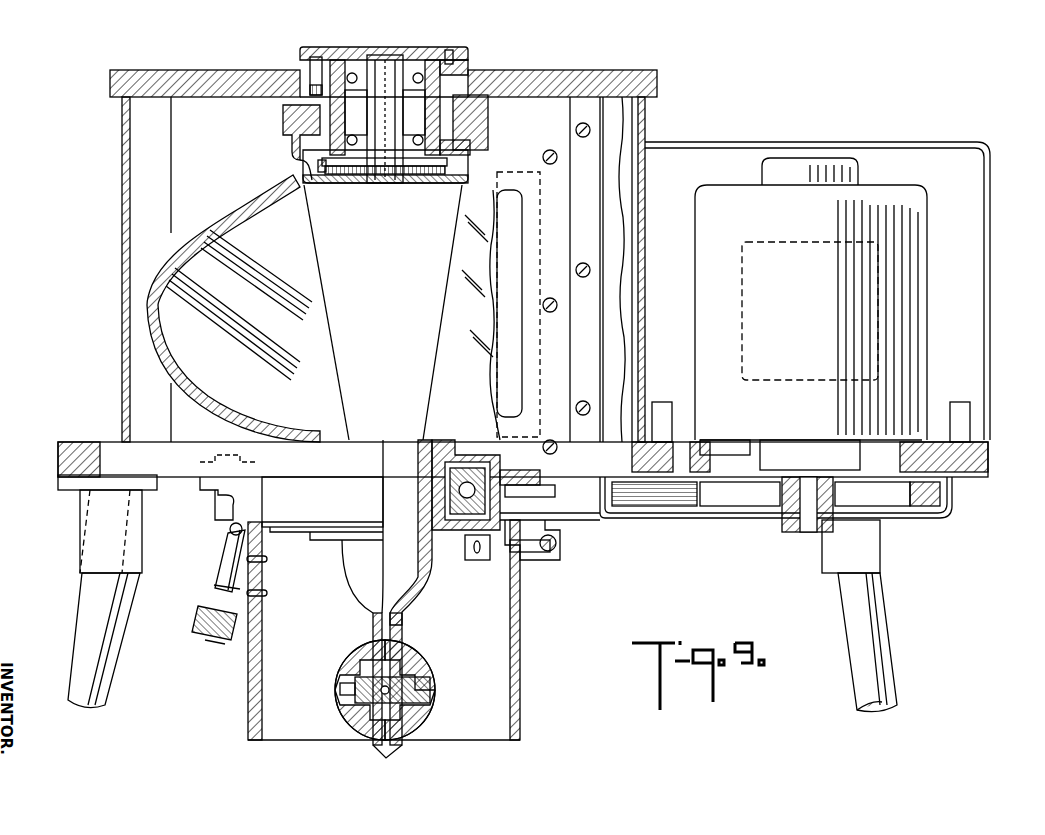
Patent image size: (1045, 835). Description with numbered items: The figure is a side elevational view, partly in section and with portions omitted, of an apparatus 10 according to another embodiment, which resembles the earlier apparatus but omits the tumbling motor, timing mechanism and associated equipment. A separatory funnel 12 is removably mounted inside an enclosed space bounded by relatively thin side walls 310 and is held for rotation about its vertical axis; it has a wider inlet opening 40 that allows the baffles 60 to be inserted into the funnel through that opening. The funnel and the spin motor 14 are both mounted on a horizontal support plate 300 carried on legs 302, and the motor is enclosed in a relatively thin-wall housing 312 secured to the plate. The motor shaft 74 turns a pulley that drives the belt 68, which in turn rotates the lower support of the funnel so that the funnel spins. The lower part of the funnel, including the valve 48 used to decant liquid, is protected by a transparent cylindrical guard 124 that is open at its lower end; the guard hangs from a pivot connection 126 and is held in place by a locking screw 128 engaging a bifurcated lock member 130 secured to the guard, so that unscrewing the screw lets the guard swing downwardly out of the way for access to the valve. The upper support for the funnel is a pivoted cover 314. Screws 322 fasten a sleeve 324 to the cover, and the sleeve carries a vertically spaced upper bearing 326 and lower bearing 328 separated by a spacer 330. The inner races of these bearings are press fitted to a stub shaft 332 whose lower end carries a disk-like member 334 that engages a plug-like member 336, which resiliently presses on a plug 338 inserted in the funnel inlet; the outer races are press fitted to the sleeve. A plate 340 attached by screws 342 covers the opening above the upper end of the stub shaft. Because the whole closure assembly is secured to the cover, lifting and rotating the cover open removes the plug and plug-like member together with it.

The apparatus 10 is at (998, 152).
The separatory funnel 12 is at (234, 205).
The spin motor 14 is at (820, 316).
The inlet opening 40 is at (285, 122).
The valve 48 is at (432, 688).
The baffles 60 is at (325, 318).
The belt 68 is at (660, 505).
The shaft 74 is at (805, 532).
The cylindrical guard 124 is at (520, 680).
The pivot connection 126 is at (555, 553).
The locking screw 128 is at (198, 630).
The bifurcated lock member 130 is at (218, 582).
The horizontal support plate 300 is at (978, 477).
The legs 302 is at (875, 608).
The thin walls 310 is at (122, 233).
The thin-wall housing 312 is at (990, 265).
The cover 314 is at (578, 72).
The screws 322 is at (300, 55).
The sleeve 324 is at (470, 58).
The upper bearing 326 is at (420, 48).
The lower bearing 328 is at (470, 135).
The spacer 330 is at (440, 100).
The stub shaft 332 is at (385, 60).
The disk-like member 334 is at (440, 178).
The plug-like member 336 is at (318, 178).
The plug 338 is at (372, 185).
The plate 340 is at (338, 48).
The screws 342 is at (452, 48).